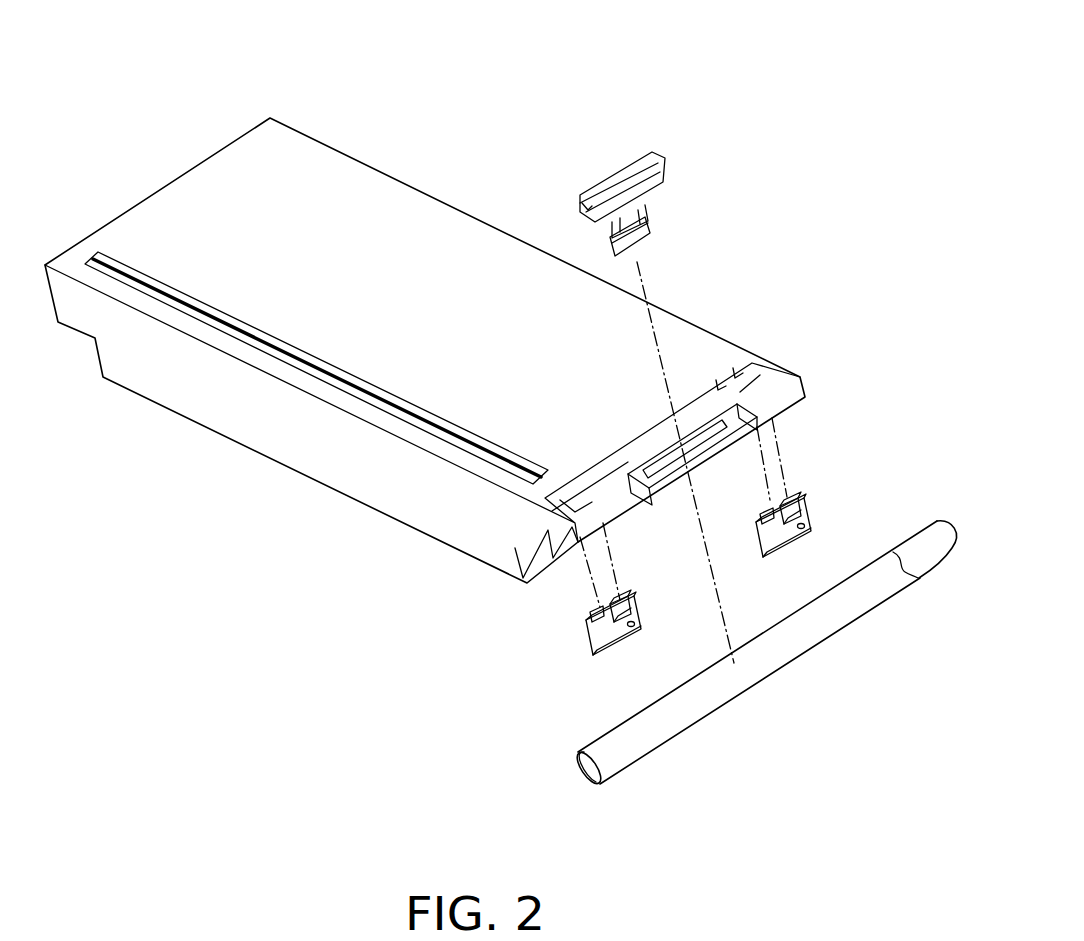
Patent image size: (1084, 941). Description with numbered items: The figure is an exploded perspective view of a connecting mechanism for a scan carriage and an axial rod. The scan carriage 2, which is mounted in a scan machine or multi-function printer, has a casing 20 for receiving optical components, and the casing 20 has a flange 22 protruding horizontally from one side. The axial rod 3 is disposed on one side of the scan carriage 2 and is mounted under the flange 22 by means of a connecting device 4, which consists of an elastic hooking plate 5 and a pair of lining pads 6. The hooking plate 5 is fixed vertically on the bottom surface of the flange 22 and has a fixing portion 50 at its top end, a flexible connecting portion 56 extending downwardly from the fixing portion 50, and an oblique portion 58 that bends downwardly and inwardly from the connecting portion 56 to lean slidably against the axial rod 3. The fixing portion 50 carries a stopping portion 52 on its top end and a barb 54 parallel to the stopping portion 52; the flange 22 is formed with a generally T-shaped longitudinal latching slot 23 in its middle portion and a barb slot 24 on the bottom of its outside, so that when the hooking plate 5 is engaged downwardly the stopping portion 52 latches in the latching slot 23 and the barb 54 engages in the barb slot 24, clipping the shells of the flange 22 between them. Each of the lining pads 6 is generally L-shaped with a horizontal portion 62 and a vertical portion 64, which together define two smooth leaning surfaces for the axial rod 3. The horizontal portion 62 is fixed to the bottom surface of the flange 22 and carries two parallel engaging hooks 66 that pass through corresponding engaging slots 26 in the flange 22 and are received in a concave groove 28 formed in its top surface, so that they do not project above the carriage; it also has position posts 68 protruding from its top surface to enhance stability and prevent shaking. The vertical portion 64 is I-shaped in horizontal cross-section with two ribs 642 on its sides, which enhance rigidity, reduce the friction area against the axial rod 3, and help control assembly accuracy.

The scan carriage 2 is at (418, 160).
The casing 20 is at (303, 455).
The flange 22 is at (522, 575).
The latching slot 23 is at (680, 473).
The barb slot 24 is at (690, 472).
The engaging slots 26 is at (547, 505).
The concave groove 28 is at (598, 482).
The axial rod 3 is at (824, 658).
The connecting device 4 is at (867, 296).
The hooking plate 5 is at (678, 189).
The fixing portion 50 is at (535, 113).
The stopping portion 52 is at (621, 177).
The barb 54 is at (590, 191).
The flexible connecting portion 56 is at (608, 233).
The oblique portion 58 is at (623, 260).
The lining pads 6 is at (818, 492).
The horizontal portion 62 is at (613, 652).
The vertical portion 64 is at (588, 643).
The engaging hooks 66 is at (588, 613).
The position post 68 is at (638, 640).
The ribs 642 is at (777, 552).